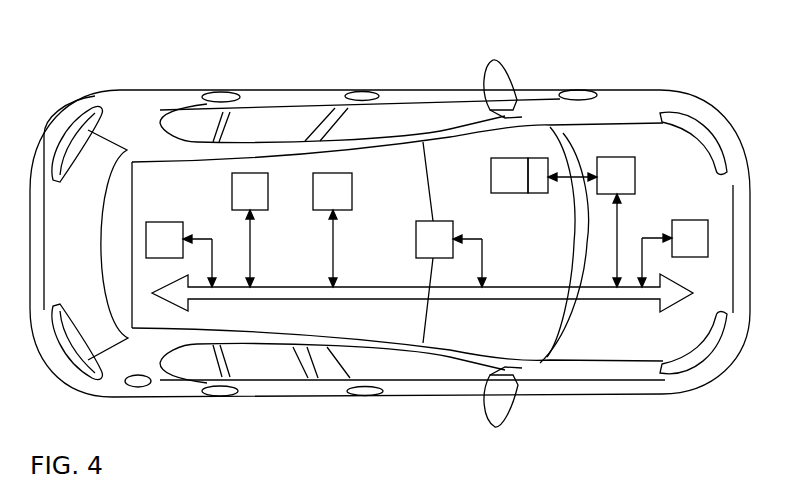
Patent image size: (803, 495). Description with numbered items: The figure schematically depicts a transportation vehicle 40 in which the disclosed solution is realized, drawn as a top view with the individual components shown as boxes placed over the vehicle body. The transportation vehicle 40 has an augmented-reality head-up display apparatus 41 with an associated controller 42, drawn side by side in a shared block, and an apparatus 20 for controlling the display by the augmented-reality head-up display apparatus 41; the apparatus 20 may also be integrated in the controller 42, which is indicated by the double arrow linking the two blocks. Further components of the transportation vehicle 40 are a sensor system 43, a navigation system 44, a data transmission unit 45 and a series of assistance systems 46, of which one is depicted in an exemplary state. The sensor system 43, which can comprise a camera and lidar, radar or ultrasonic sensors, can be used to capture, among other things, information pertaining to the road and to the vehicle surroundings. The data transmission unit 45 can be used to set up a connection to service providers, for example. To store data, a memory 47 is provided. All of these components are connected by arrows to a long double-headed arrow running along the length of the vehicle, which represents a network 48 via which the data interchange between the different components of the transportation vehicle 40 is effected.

The transportation vehicle 40 is at (662, 90).
The apparatus for controlling a display 20 is at (615, 158).
The augmented-reality head-up display apparatus 41 is at (507, 158).
The controller 42 is at (537, 158).
The sensor system 43 is at (427, 222).
The navigation system 44 is at (322, 173).
The data transmission unit 45 is at (238, 173).
The assistance systems 46 is at (688, 220).
The memory 47 is at (168, 222).
The network 48 is at (273, 299).